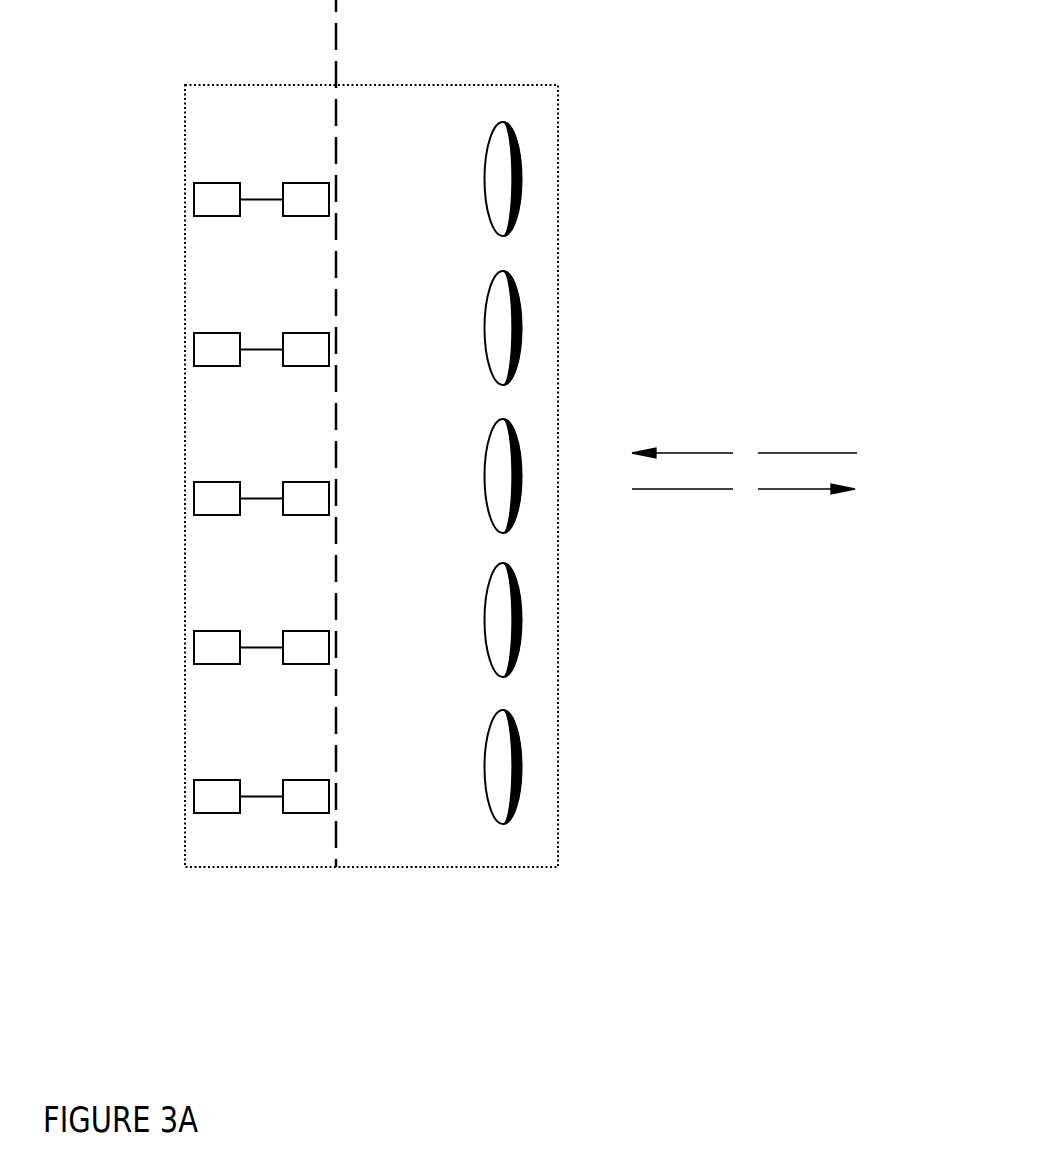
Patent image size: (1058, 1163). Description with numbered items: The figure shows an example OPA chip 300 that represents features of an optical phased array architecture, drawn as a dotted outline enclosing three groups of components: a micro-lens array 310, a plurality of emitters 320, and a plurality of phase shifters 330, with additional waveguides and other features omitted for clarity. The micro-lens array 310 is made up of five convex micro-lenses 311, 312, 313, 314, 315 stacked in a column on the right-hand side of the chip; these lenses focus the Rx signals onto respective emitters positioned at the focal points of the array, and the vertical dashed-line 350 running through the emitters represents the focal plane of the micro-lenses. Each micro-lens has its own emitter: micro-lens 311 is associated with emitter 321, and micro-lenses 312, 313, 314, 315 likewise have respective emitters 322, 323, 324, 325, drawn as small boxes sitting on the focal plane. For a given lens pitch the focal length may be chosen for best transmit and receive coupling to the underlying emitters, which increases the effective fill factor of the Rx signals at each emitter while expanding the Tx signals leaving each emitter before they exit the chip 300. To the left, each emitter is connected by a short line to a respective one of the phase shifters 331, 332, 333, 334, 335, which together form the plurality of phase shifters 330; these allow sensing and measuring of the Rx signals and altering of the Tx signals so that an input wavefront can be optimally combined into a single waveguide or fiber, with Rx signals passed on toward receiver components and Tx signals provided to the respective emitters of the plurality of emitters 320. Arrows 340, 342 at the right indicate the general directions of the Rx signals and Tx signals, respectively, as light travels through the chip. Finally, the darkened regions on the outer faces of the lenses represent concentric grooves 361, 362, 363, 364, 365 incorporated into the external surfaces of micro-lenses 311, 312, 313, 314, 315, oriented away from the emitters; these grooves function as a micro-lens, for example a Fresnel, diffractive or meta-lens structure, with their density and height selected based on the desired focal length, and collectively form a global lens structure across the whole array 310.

The OPA chip 300 is at (185, 108).
The micro-lens array 310 is at (504, 543).
The micro-lens 311 is at (493, 123).
The micro-lens 312 is at (493, 272).
The micro-lens 313 is at (493, 420).
The micro-lens 314 is at (493, 564).
The micro-lens 315 is at (493, 711).
The plurality of emitters 320 is at (357, 572).
The emitter 321 is at (329, 202).
The emitter 322 is at (329, 352).
The emitter 323 is at (329, 501).
The emitter 324 is at (329, 650).
The emitter 325 is at (357, 796).
The plurality of phase shifters 330 is at (170, 572).
The phase shifter 331 is at (194, 193).
The phase shifter 332 is at (194, 343).
The phase shifter 333 is at (194, 492).
The phase shifter 334 is at (194, 641).
The phase shifter 335 is at (194, 790).
The arrow 340 is at (857, 452).
The arrow 342 is at (855, 489).
The dashed-line 350 is at (336, 40).
The concentric grooves 361 is at (522, 163).
The concentric grooves 362 is at (522, 313).
The concentric grooves 363 is at (522, 463).
The concentric grooves 364 is at (522, 611).
The concentric grooves 365 is at (522, 759).